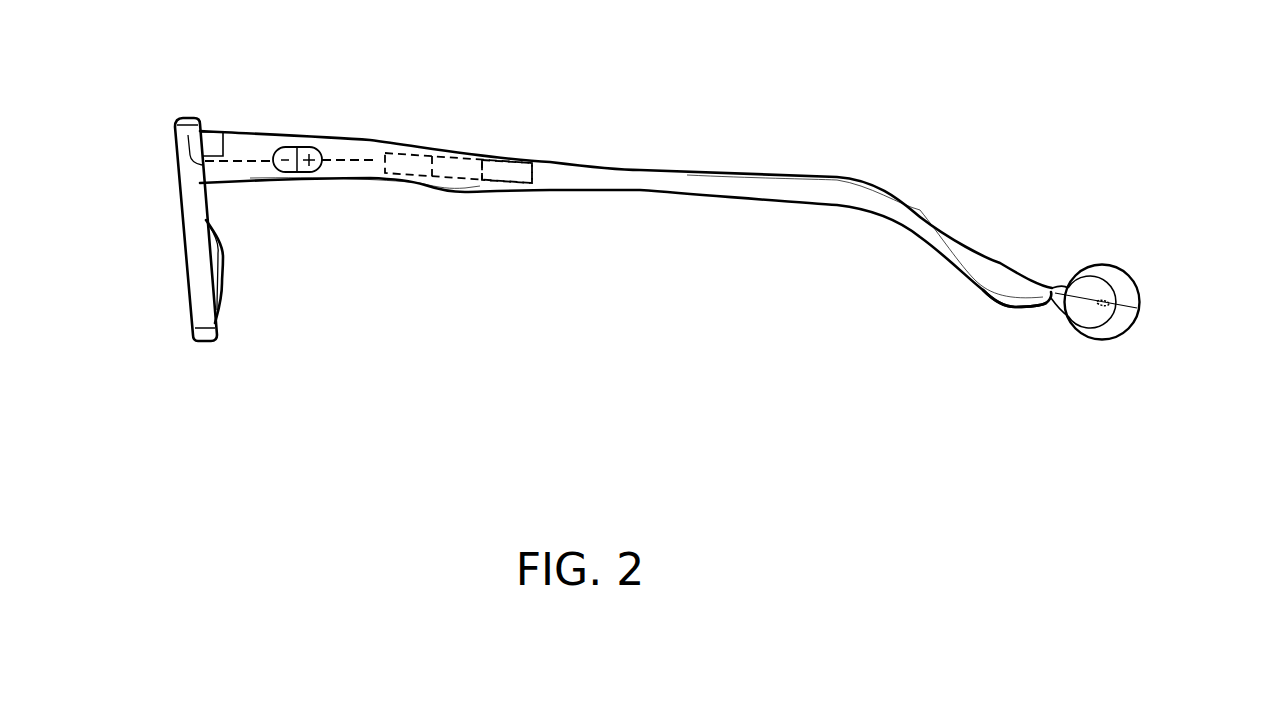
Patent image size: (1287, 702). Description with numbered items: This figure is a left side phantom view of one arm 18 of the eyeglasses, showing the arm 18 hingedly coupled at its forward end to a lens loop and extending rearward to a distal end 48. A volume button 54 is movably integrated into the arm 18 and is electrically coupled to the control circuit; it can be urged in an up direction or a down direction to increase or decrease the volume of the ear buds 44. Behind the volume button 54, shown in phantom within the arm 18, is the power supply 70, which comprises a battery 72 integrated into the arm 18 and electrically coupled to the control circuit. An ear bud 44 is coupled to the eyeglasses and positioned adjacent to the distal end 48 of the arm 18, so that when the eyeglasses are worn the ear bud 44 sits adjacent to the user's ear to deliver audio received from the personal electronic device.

The arm 18 is at (568, 160).
The volume button 54 is at (313, 147).
The battery 72 is at (378, 148).
The power supply 70 is at (532, 178).
The ear bud 44 is at (1140, 298).
The distal end 48 is at (1033, 308).